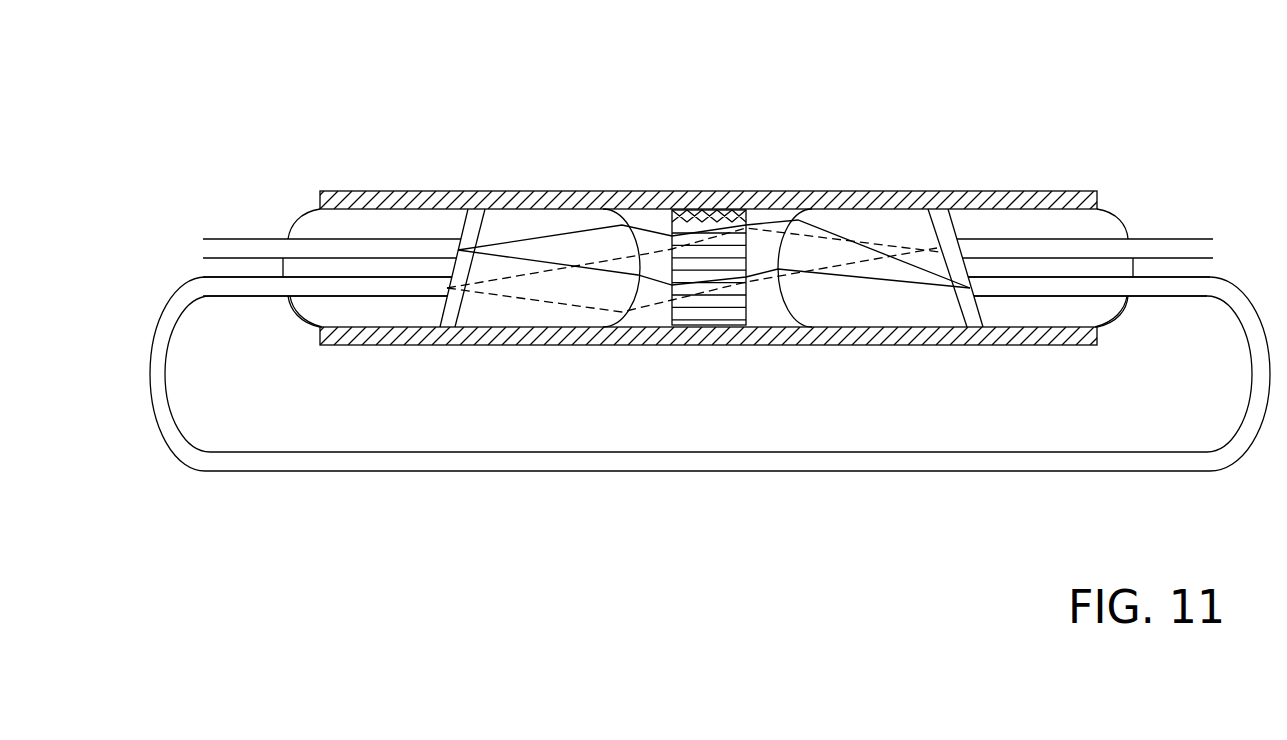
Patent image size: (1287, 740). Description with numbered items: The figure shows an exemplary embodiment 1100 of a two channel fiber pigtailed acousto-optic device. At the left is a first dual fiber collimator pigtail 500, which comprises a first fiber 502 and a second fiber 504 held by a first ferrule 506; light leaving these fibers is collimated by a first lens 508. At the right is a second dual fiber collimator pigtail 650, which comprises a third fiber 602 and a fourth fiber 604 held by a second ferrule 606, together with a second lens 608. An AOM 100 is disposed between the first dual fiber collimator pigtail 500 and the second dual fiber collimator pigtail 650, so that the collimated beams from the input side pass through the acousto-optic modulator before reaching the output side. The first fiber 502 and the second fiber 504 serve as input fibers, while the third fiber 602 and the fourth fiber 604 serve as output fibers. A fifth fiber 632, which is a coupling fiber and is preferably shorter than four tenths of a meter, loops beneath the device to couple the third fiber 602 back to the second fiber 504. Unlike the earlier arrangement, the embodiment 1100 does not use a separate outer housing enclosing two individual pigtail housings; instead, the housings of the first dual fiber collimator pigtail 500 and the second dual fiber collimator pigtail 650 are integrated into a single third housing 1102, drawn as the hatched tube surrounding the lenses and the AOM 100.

The exemplary embodiment of two channel fiber pigtailed AO device 1100 is at (290, 101).
The third housing 1102 is at (464, 190).
The first dual fiber collimator pigtail 500 is at (290, 189).
The first fiber 502 is at (245, 238).
The second fiber 504 is at (245, 297).
The first ferrule 506 is at (298, 318).
The first lens 508 is at (525, 240).
The second dual fiber collimator pigtail 650 is at (1091, 165).
The third fiber 602 is at (1173, 297).
The fourth fiber 604 is at (1172, 239).
The second ferrule 606 is at (1117, 312).
The second lens 608 is at (872, 316).
The AOM 100 is at (752, 307).
The fifth fiber 632 is at (1085, 453).